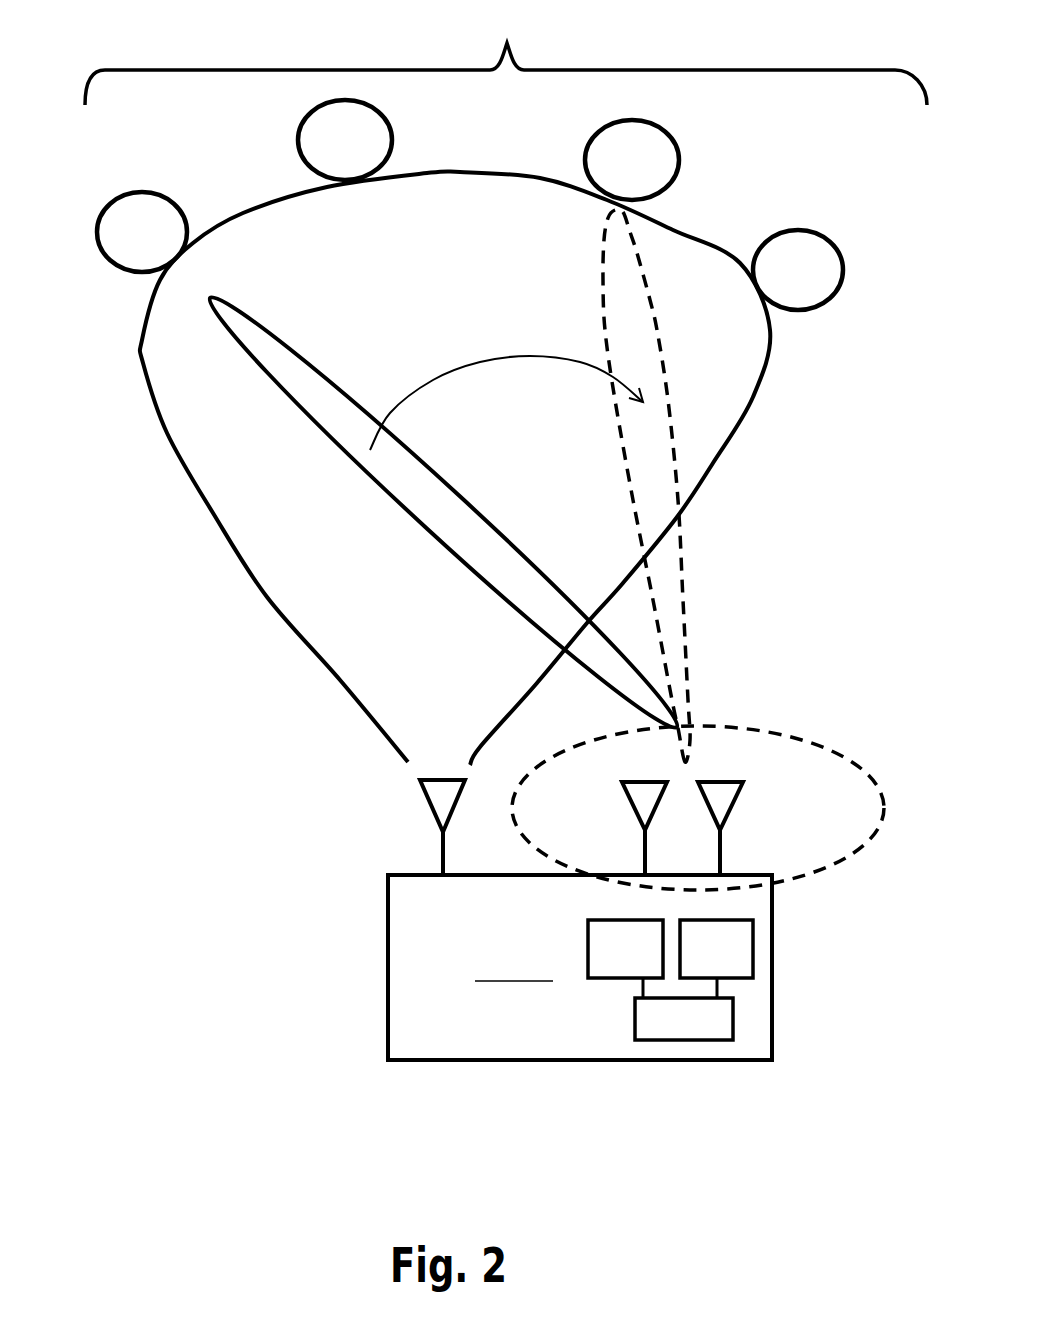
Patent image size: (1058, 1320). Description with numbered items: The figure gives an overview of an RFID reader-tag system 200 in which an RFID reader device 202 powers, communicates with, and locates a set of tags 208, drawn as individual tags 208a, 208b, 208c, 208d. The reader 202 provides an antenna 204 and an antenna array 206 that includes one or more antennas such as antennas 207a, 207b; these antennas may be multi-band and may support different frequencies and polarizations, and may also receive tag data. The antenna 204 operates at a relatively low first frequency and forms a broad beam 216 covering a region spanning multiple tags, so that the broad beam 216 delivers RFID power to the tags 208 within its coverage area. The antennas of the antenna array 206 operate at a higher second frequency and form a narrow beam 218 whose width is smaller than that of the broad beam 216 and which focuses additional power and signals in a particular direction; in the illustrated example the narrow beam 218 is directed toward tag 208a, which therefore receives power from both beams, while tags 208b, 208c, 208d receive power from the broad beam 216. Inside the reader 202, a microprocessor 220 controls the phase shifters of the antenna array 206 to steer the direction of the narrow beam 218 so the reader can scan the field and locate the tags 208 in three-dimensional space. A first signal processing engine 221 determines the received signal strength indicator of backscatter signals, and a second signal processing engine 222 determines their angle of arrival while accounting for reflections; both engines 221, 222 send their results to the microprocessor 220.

The RFID reader-tag system 200 is at (127, 871).
The RFID reader device 202 is at (388, 939).
The antenna 204 is at (418, 795).
The antenna array 206 is at (800, 877).
The antenna 207a is at (630, 810).
The antenna 207b is at (738, 805).
The tags 208 is at (506, 57).
The tag 208a is at (177, 200).
The tag 208b is at (392, 138).
The tag 208c is at (680, 160).
The tag 208d is at (800, 230).
The broad beam 216 is at (211, 518).
The narrow beam 218 is at (492, 510).
The microprocessor 220 is at (677, 1042).
The first signal processing engine 221 is at (625, 959).
The second signal processing engine 222 is at (716, 959).